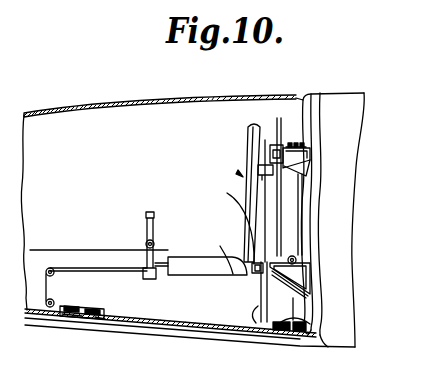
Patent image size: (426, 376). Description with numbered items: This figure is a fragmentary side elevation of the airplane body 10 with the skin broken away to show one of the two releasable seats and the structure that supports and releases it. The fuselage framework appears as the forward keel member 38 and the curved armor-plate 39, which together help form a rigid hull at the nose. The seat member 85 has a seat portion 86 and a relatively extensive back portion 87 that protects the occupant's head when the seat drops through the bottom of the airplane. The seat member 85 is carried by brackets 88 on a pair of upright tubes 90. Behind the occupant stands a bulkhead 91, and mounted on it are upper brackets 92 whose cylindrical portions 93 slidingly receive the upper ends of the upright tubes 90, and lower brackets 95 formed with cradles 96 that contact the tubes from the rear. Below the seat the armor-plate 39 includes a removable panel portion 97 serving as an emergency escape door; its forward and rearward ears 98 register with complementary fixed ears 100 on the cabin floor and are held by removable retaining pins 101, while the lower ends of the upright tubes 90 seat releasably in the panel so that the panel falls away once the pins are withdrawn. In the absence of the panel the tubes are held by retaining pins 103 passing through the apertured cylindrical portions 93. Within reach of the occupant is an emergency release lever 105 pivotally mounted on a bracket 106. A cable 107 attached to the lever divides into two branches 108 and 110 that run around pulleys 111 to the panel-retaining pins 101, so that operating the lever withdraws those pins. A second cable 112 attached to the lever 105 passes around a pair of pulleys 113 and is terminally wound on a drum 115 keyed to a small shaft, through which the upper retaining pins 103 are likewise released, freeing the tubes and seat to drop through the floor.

The airplane body 10 is at (109, 98).
The forward keel member 38 is at (24, 306).
The armor-plate 39 is at (30, 322).
The seat member 85 is at (240, 176).
The seat portion 86 is at (203, 258).
The back portion 87 is at (251, 126).
The brackets 88 is at (229, 196).
The upright tubes 90 is at (302, 192).
The bulkhead 91 is at (307, 118).
The upper brackets 92 is at (308, 163).
The cylindrical portions 93 is at (283, 144).
The lower brackets 95 is at (305, 285).
The cradles 96 is at (302, 271).
The removable panel portion 97 is at (201, 339).
The forward and rearward ears 98 is at (256, 307).
The fixed ears 100 is at (90, 306).
The retaining pins 101 is at (101, 321).
The retaining pins 103 is at (268, 164).
The emergency release lever 105 is at (147, 214).
The bracket 106 is at (146, 243).
The cable 107 is at (68, 267).
The branch 108 is at (85, 320).
The branch 110 is at (153, 322).
The pulleys 111 is at (75, 313).
The cable 112 is at (163, 267).
The pulleys 113 is at (292, 256).
The drum 115 is at (304, 146).